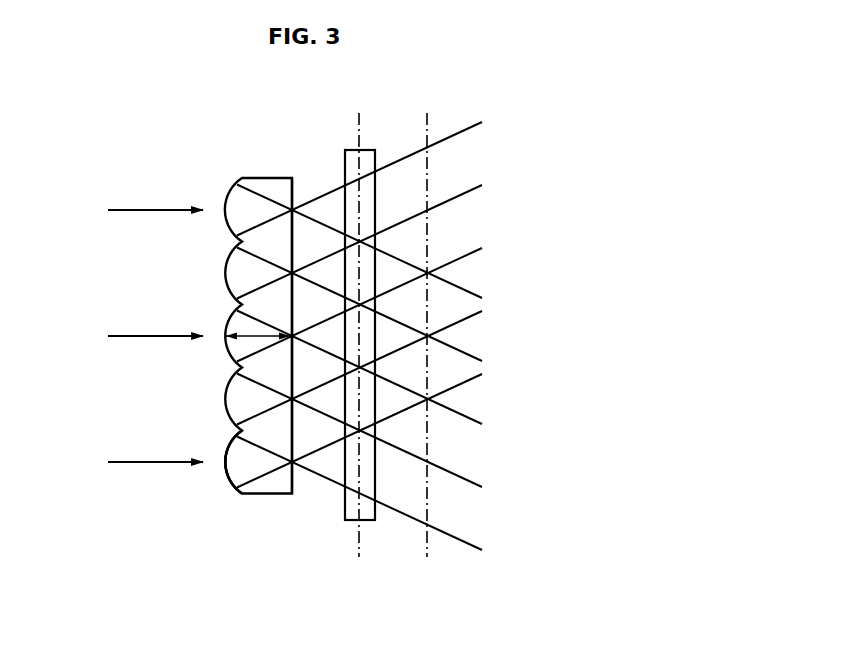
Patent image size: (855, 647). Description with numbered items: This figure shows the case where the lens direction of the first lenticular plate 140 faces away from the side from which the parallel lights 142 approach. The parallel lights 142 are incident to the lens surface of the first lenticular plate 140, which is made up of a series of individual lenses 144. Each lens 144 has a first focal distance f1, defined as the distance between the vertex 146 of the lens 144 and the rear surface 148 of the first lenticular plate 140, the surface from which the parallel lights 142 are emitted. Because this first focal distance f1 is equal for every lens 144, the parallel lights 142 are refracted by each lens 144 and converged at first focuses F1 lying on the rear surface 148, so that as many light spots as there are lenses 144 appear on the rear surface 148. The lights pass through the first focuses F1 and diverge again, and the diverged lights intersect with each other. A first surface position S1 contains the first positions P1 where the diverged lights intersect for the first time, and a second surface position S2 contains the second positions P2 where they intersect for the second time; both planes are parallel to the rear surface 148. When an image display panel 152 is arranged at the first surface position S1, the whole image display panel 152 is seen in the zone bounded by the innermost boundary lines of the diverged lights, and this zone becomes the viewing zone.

The first lenticular plate 140 is at (268, 495).
The parallel lights 142 is at (156, 208).
The lens 144 is at (240, 463).
The vertex 146 is at (222, 453).
The rear surface 148 is at (296, 190).
The image display panel 152 is at (369, 147).
The first focal distance f1 is at (246, 335).
The first focus F1 is at (294, 465).
The first position P1 is at (362, 240).
The second position P2 is at (430, 272).
The first surface position S1 is at (357, 553).
The second surface position S2 is at (429, 553).